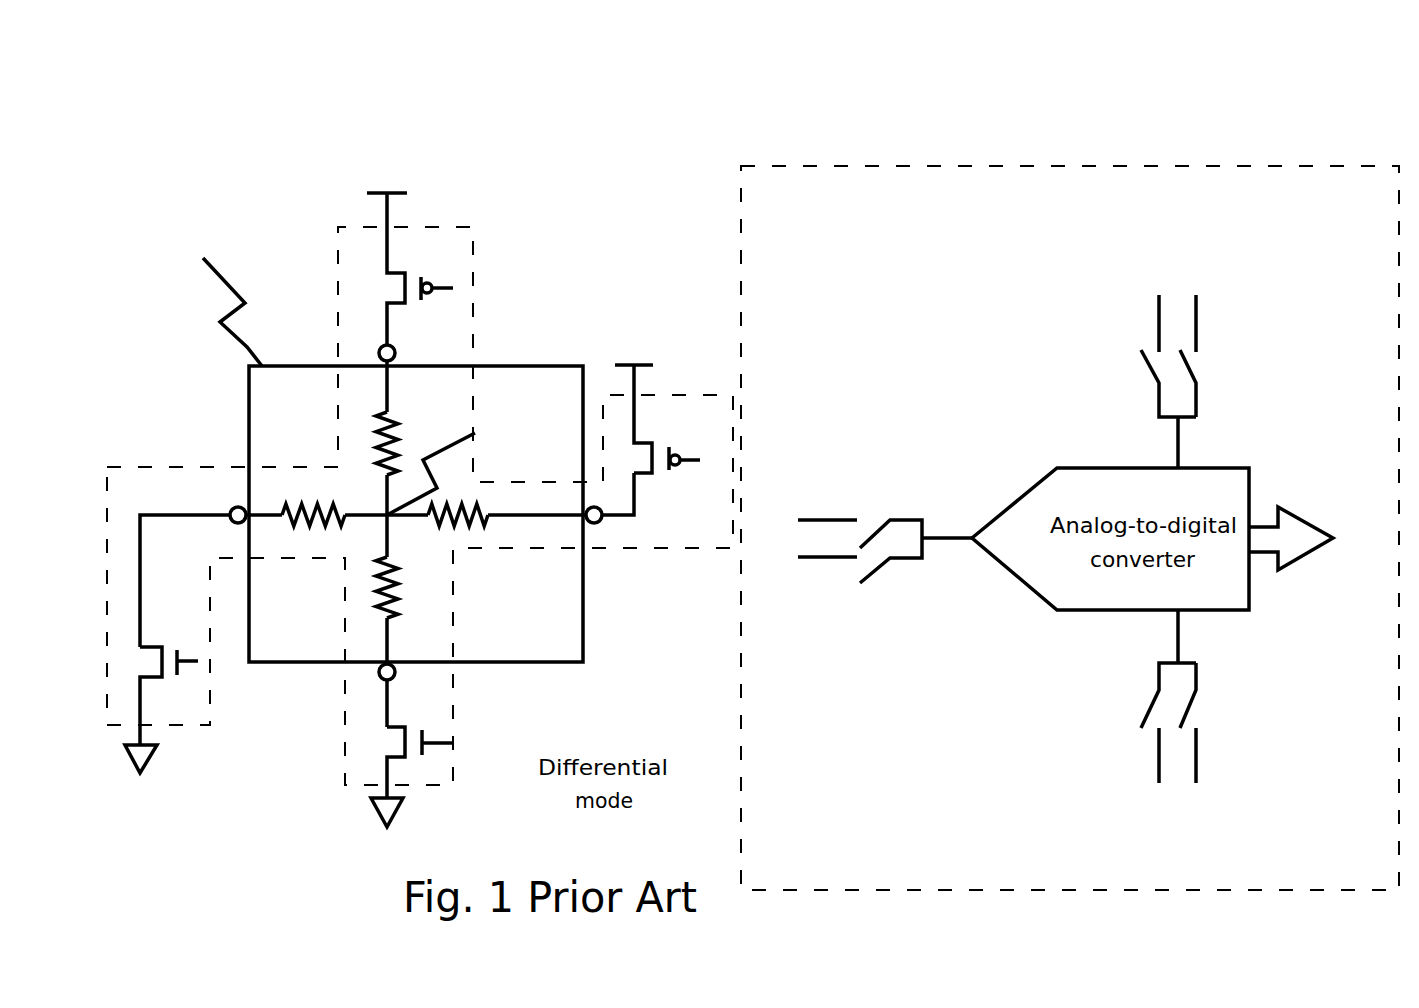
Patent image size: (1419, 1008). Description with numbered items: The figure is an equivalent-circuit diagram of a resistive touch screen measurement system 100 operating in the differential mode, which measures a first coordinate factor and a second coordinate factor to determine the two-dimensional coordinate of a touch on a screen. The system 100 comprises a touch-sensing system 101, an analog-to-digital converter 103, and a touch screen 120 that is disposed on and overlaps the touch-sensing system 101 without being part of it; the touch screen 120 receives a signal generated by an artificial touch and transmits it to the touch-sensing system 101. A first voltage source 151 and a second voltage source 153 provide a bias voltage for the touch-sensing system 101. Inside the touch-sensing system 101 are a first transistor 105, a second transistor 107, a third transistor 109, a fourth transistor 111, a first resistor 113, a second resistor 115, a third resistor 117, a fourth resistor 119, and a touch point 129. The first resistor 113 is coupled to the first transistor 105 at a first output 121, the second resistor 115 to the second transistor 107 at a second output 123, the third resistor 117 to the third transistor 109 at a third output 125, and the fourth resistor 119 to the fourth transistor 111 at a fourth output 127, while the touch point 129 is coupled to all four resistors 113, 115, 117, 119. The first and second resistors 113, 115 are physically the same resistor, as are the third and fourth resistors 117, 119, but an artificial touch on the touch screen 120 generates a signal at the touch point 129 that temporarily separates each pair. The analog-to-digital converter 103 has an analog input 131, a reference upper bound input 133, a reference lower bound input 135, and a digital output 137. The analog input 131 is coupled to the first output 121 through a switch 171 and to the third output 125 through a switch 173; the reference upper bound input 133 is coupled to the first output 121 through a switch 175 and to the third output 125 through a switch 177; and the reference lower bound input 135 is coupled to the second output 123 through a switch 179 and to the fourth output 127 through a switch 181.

The resistive touch screen measurement system 100 is at (478, 116).
The touch-sensing system 101 is at (124, 466).
The analog-to-digital converter 103 is at (842, 851).
The first transistor 105 is at (400, 269).
The second transistor 107 is at (399, 762).
The third transistor 109 is at (653, 420).
The fourth transistor 111 is at (154, 696).
The first resistor 113 is at (408, 459).
The second resistor 115 is at (408, 610).
The third resistor 117 is at (507, 525).
The fourth resistor 119 is at (337, 530).
The touch screen 120 is at (228, 278).
The first output 121 is at (1205, 230).
The second output 123 is at (395, 672).
The third output 125 is at (600, 524).
The fourth output 127 is at (233, 520).
The touch point 129 is at (452, 450).
The analog input 131 is at (1012, 603).
The reference upper bound input 133 is at (1110, 458).
The reference lower bound input 135 is at (1115, 628).
The digital output 137 is at (1371, 595).
The first voltage source 151 is at (390, 192).
The second voltage source 153 is at (146, 760).
The switch 171 is at (868, 534).
The switch 173 is at (872, 568).
The switch 175 is at (1190, 364).
The switch 177 is at (1144, 368).
The switch 179 is at (1190, 706).
The switch 181 is at (1144, 710).